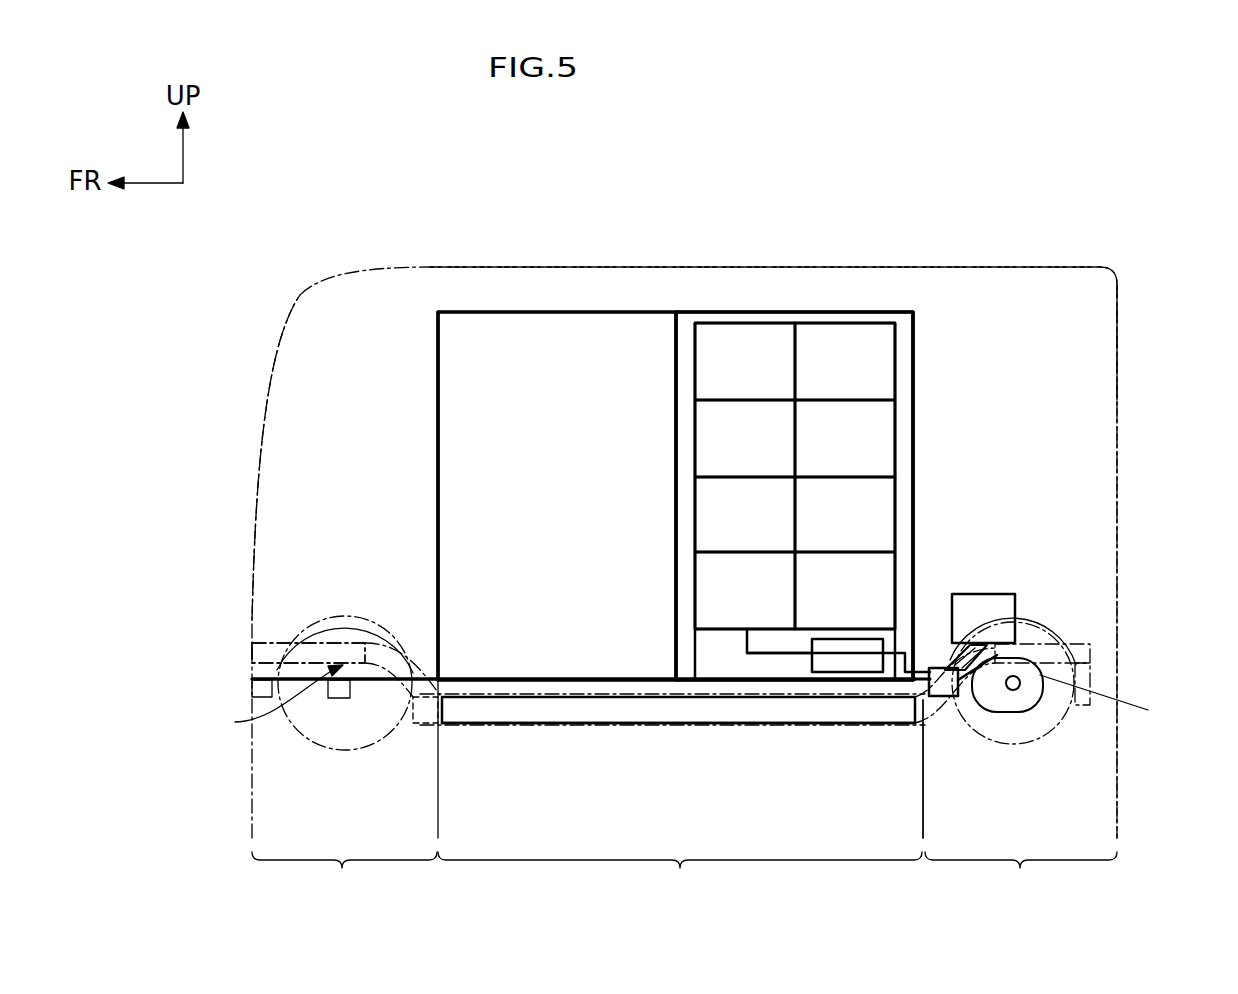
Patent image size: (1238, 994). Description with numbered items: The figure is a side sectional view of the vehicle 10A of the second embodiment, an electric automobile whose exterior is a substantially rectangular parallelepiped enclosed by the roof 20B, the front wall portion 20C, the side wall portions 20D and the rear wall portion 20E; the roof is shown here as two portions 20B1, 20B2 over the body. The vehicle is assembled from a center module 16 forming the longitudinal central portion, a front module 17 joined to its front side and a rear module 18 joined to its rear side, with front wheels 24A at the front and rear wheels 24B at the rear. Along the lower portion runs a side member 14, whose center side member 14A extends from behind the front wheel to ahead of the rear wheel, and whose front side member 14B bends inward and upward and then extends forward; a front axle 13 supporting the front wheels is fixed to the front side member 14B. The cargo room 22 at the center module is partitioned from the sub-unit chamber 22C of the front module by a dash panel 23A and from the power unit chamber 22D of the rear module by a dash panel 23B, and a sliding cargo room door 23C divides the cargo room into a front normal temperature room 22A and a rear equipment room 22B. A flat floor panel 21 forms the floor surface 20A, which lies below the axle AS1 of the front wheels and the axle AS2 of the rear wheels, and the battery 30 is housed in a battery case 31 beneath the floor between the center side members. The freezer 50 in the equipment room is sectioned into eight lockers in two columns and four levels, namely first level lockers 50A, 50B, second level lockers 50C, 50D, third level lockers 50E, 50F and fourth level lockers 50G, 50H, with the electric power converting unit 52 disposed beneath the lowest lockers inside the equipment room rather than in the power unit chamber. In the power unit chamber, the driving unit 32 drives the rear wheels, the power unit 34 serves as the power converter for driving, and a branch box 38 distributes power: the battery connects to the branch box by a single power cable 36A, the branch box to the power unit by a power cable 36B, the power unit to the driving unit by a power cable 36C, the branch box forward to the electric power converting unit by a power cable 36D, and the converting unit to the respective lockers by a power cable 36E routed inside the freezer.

The vehicle 10A is at (1000, 185).
The front axle 13 is at (330, 705).
The side member 14 is at (416, 732).
The center side member 14A is at (548, 712).
The front side member 14B is at (340, 655).
The center module 16 is at (680, 878).
The front module 17 is at (344, 878).
The rear module 18 is at (1021, 878).
The floor surface 20A is at (525, 678).
The roof 20B is at (465, 135).
The rear cabin portion 20B1 is at (592, 265).
The front cabin portion 20B2 is at (532, 325).
The front wall portion 20C is at (262, 480).
The side wall portion 20D is at (1075, 298).
The rear wall portion 20E is at (1120, 385).
The floor panel 21 is at (480, 678).
The cargo room 22 is at (805, 158).
The normal temperature room 22A is at (652, 318).
The equipment room 22B is at (790, 305).
The sub-unit chamber 22C is at (278, 552).
The power unit chamber 22D is at (1093, 627).
The dash panel 23A is at (437, 405).
The dash panel 23B is at (913, 343).
The cargo room door 23C is at (668, 340).
The front wheel 24A is at (365, 732).
The rear wheel 24B is at (1010, 730).
The battery 30 is at (730, 712).
The battery case 31 is at (687, 724).
The driving unit 32 is at (1040, 725).
The power unit 34 is at (995, 605).
The power cable 36A is at (925, 700).
The power cable 36B is at (945, 660).
The power cable 36C is at (1012, 655).
The power cable 36D is at (927, 667).
The power cable 36E is at (785, 655).
The branch box 38 is at (958, 700).
The freezer 50 is at (905, 368).
The first level locker 50A is at (717, 368).
The first level locker 50B is at (845, 377).
The second level locker 50C is at (723, 428).
The second level locker 50D is at (857, 440).
The third level locker 50E is at (723, 495).
The third level locker 50F is at (813, 520).
The fourth level locker 50G is at (737, 578).
The fourth level locker 50H is at (813, 605).
The electric power converting unit 52 is at (860, 657).
The axle AS1 is at (261, 702).
The axle AS2 is at (1121, 700).